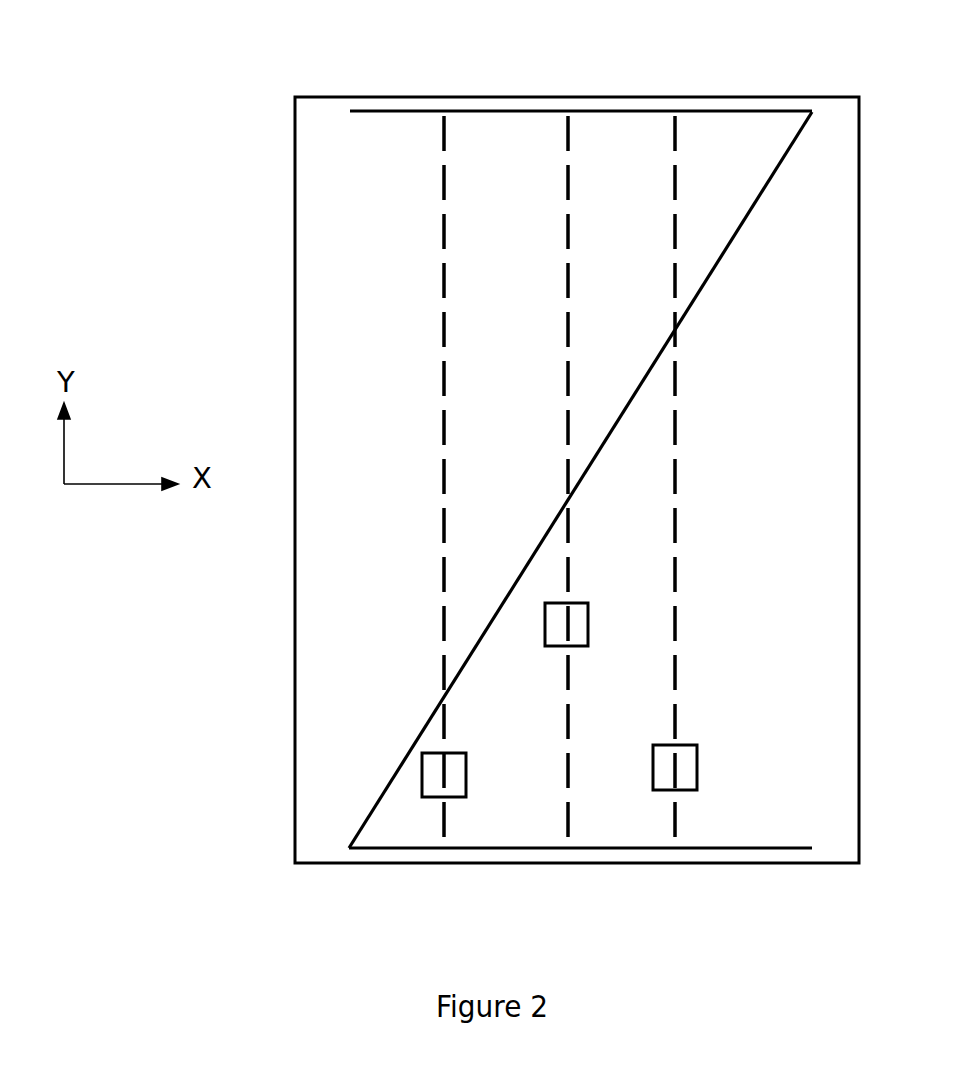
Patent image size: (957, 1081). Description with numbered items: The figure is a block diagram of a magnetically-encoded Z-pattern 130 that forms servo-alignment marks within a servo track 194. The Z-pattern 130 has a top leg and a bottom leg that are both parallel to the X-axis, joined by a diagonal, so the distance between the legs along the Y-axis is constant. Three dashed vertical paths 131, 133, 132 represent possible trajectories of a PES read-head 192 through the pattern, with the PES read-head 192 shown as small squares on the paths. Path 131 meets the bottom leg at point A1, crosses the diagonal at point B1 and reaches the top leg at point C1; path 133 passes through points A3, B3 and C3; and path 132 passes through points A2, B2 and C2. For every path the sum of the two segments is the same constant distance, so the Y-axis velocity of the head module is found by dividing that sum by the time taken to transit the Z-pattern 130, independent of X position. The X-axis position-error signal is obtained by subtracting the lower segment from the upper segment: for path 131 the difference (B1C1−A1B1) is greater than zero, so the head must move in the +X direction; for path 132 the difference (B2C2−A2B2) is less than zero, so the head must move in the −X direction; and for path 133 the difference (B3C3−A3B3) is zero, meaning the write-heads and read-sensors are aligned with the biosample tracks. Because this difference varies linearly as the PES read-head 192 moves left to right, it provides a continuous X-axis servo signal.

The servo track 194 is at (476, 97).
The Z-pattern 130 is at (770, 180).
The path 131 is at (443, 280).
The path 132 is at (677, 576).
The path 133 is at (562, 290).
The PES read-head 192 is at (566, 625).
The point C1 is at (444, 116).
The point C2 is at (675, 116).
The point C3 is at (568, 116).
The point B1 is at (443, 693).
The point B2 is at (675, 330).
The point B3 is at (568, 497).
The point A1 is at (445, 845).
The point A2 is at (675, 846).
The point A3 is at (568, 846).